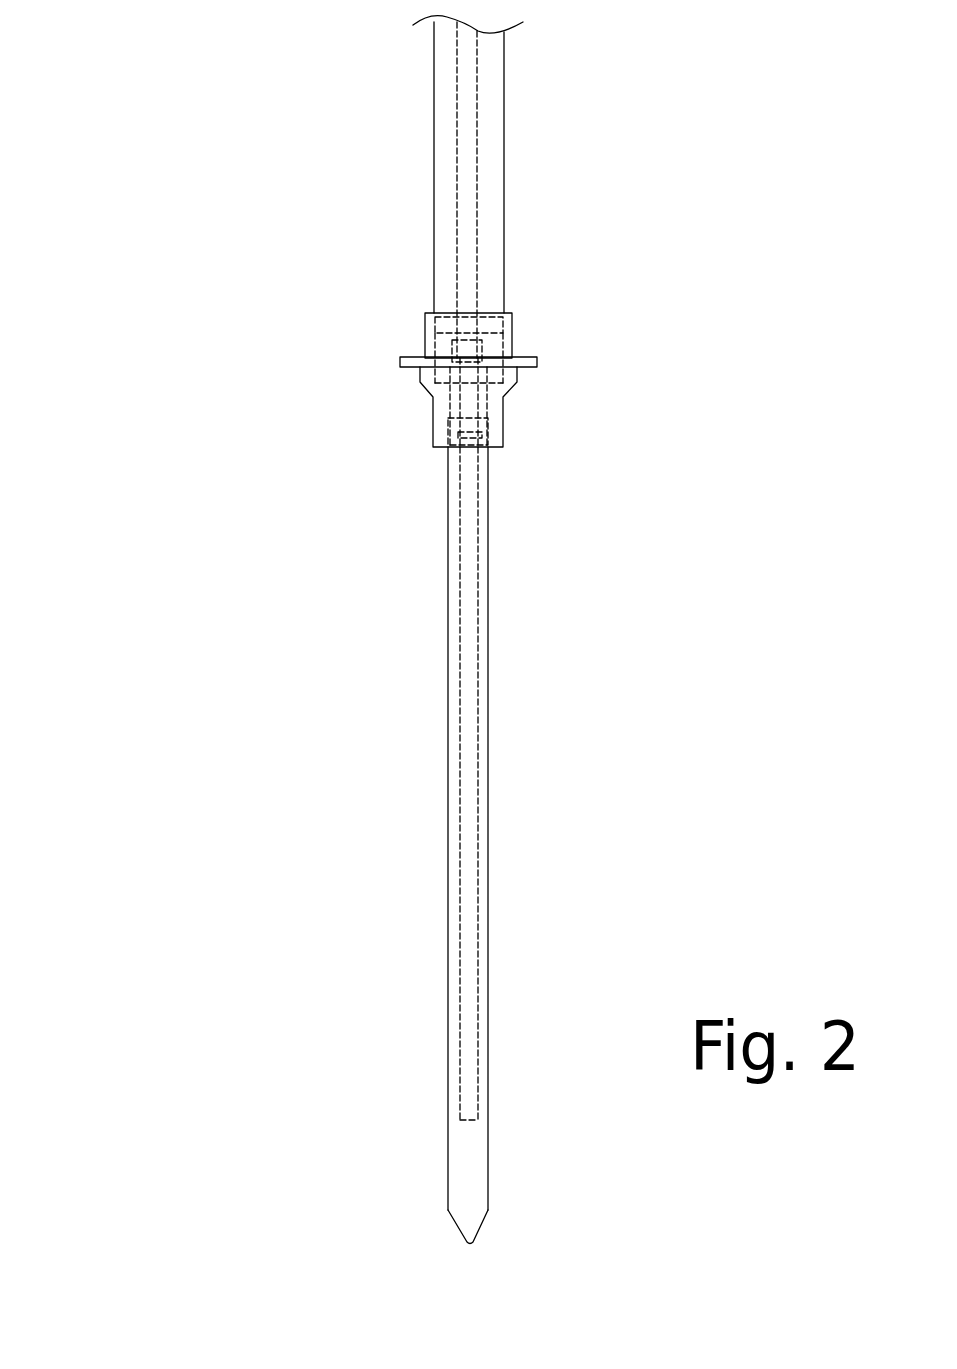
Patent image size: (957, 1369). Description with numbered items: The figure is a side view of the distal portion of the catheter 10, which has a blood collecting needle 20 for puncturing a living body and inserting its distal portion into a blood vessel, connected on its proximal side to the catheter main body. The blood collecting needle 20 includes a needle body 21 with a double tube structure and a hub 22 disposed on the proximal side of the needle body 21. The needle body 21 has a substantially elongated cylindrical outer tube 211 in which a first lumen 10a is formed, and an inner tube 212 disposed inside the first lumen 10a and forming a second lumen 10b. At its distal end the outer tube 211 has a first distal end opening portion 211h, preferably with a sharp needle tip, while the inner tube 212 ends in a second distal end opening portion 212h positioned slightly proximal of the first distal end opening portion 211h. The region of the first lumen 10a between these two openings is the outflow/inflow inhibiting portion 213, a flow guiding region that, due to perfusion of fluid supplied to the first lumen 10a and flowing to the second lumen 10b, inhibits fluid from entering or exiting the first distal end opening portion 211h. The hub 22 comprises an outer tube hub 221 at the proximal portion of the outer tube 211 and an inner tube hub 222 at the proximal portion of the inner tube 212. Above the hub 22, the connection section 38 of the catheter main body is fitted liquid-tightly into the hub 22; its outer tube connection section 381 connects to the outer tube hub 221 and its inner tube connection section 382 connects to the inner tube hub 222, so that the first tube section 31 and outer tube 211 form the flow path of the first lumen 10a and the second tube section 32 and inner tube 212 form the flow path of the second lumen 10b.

The catheter 10 is at (92, 62).
The first lumen 10a is at (450, 823).
The second lumen 10b is at (468, 903).
The blood collecting needle 20 is at (551, 810).
The needle body 21 is at (522, 855).
The outer tube 211 is at (490, 680).
The first distal end opening portion 211h is at (473, 1244).
The inner tube 212 is at (478, 737).
The second distal end opening portion 212h is at (458, 1123).
The outflow/inflow inhibiting portion 213 is at (472, 1157).
The hub 22 is at (555, 438).
The outer tube hub 221 is at (537, 362).
The inner tube hub 222 is at (488, 425).
The first tube section 31 is at (504, 108).
The second tube section 32 is at (477, 165).
The connection section 38 is at (383, 327).
The outer tube connection section 381 is at (425, 322).
The inner tube connection section 382 is at (452, 350).